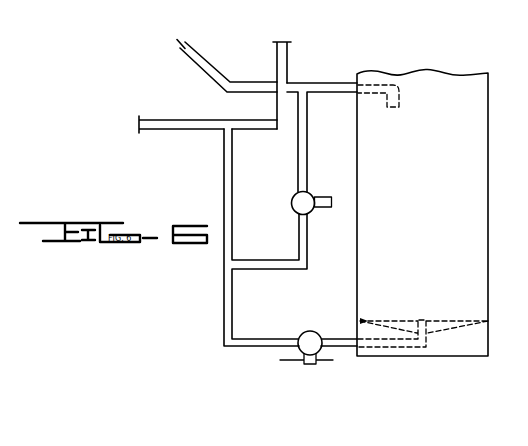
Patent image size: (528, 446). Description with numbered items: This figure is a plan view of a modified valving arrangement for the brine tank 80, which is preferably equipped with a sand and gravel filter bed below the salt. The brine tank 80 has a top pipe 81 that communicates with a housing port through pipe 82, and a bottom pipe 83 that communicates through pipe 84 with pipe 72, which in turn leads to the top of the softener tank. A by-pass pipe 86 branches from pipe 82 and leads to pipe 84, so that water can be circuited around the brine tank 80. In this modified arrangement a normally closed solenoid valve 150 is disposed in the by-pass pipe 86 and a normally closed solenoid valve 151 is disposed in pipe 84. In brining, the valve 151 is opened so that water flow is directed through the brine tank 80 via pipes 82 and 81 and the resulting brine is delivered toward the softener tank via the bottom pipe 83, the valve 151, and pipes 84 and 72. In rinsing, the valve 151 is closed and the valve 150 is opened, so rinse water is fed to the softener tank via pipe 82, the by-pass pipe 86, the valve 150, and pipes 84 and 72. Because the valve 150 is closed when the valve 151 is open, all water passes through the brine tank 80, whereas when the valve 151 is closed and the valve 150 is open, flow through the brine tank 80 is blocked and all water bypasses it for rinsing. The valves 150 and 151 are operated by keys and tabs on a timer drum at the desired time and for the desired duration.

The pipe 72 is at (281, 62).
The brine tank 80 is at (359, 257).
The top pipe 81 is at (401, 99).
The pipe 82 is at (205, 67).
The bottom pipe 83 is at (423, 320).
The pipe 84 is at (227, 310).
The by-pass pipe 86 is at (300, 159).
The solenoid valve 150 is at (297, 204).
The solenoid valve 151 is at (307, 337).